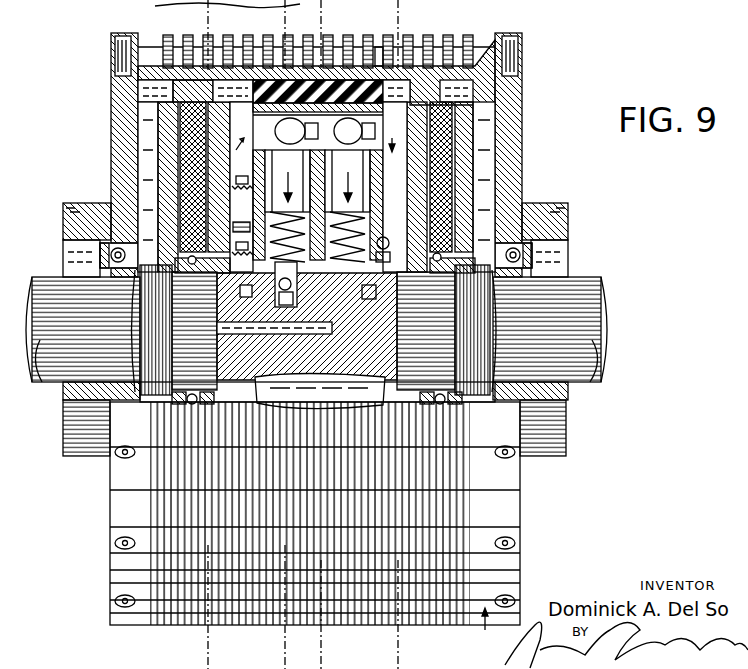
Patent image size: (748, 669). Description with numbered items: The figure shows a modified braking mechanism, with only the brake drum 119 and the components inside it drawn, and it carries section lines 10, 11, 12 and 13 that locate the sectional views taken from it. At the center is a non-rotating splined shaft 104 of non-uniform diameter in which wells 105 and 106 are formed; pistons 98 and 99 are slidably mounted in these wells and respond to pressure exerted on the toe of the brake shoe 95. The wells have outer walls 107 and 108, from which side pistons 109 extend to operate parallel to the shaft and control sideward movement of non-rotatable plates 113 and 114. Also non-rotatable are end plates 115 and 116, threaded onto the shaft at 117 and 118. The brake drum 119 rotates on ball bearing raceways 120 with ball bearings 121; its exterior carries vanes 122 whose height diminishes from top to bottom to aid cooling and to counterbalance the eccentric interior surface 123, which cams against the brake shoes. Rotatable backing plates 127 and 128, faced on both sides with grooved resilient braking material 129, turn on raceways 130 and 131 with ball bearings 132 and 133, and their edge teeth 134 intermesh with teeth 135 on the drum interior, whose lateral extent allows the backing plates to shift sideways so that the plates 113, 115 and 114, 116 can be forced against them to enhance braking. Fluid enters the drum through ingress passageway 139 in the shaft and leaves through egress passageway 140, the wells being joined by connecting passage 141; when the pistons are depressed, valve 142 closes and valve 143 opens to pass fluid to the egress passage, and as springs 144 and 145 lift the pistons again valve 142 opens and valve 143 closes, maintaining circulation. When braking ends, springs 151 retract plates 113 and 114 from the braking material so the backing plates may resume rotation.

The section line 10— 10 is at (222, 21).
The section line 11— 11 is at (412, 5).
The section line 12— 12 is at (285, 21).
The section line 13— 13 is at (305, 21).
The brake shoe 95 is at (290, 56).
The piston 98 is at (292, 168).
The piston 99 is at (352, 168).
The splined shaft 104 is at (50, 300).
The well 105 is at (298, 280).
The well 106 is at (378, 250).
The outer wall 107 is at (244, 136).
The outer wall 108 is at (401, 135).
The piston 109 is at (324, 218).
The plate 113 is at (237, 176).
The plate 114 is at (398, 176).
The end plate 115 is at (163, 165).
The end plate 116 is at (522, 127).
The threaded connection 117 is at (147, 410).
The threaded connection 118 is at (472, 412).
The brake drum 119 is at (108, 502).
The ball bearing raceway 120 is at (97, 263).
The ball bearing 121 is at (101, 207).
The vane 122 is at (492, 58).
The interior surface 123 is at (386, 58).
The backing plate 127 is at (197, 157).
The backing plate 128 is at (520, 110).
The braking material 129 is at (183, 128).
The raceway 130 is at (187, 257).
The raceway 131 is at (482, 262).
The ball bearing 132 is at (205, 301).
The ball bearing 133 is at (426, 331).
The teeth 134 is at (193, 100).
The teeth 135 is at (170, 96).
The ingress passageway 139 is at (245, 292).
The egress passageway 140 is at (317, 333).
The connecting passage 141 is at (316, 240).
The valve 142 is at (372, 260).
The valve 143 is at (274, 316).
The spring 144 is at (284, 194).
The spring 145 is at (344, 194).
The spring 151 is at (324, 237).